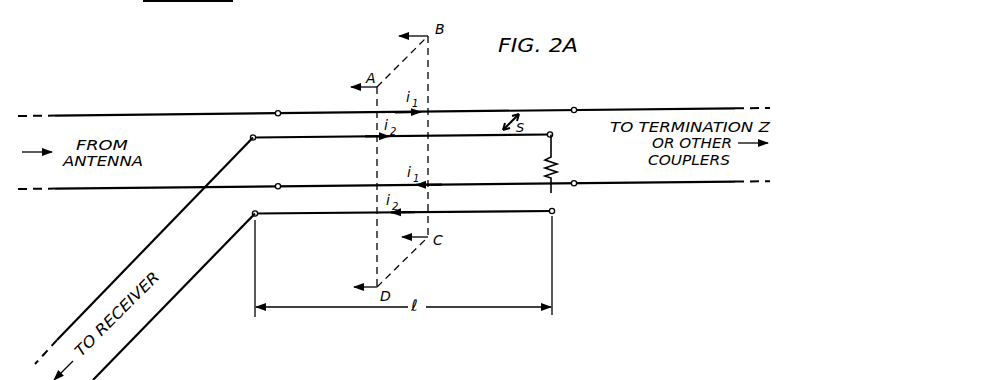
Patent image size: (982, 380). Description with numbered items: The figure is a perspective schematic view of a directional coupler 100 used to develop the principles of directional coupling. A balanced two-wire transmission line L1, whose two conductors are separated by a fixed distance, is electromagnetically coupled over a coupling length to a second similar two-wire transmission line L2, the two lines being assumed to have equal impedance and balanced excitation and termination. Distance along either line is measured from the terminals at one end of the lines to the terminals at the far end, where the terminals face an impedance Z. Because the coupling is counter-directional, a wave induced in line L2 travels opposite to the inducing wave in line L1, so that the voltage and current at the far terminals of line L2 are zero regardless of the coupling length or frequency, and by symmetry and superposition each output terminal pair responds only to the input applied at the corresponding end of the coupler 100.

The directional coupler 100 is at (322, 271).
The balanced two-wire transmission line L1 is at (172, 188).
The second two-wire transmission line L2 is at (331, 213).
The impedance Z is at (534, 164).